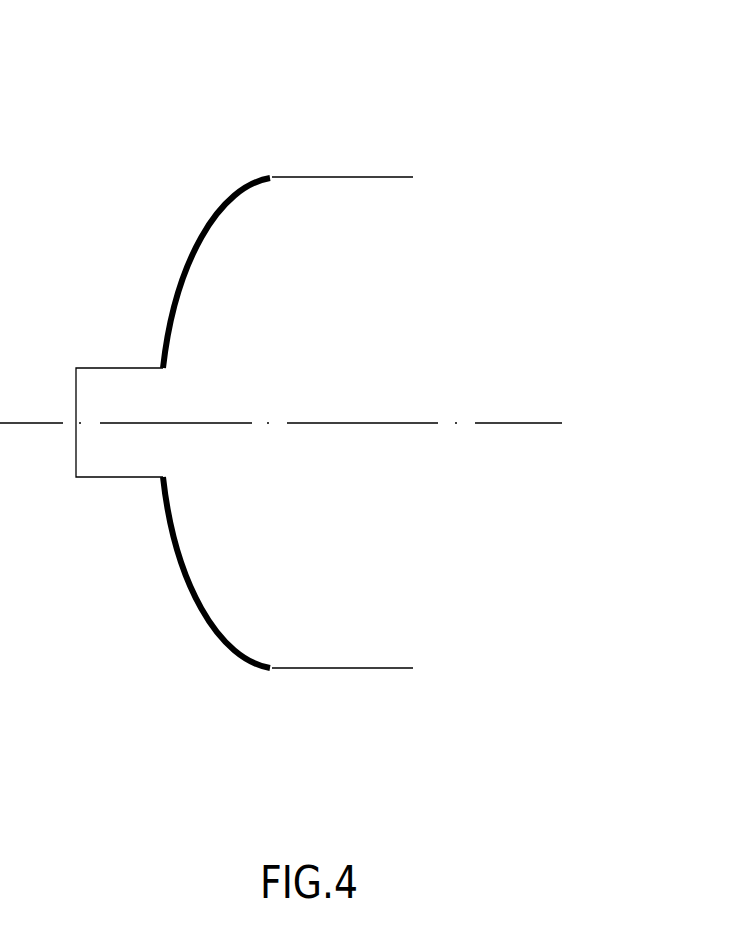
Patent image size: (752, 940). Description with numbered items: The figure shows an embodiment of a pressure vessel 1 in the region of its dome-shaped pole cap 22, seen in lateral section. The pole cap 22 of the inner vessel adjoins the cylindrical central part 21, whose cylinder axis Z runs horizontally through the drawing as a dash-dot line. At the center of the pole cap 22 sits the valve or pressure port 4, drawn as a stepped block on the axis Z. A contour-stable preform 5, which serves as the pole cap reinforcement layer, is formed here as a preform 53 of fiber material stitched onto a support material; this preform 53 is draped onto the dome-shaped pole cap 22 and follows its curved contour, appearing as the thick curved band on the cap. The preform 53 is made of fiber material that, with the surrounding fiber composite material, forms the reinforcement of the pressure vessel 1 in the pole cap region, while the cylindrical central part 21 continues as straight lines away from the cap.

The pressure vessel 1 is at (168, 158).
The valve/pressure port 4 is at (105, 480).
The contour-stable preform 5 is at (246, 343).
The cylindrical central part 21 is at (373, 665).
The dome-shaped pole cap 22 is at (175, 423).
The contour-stable preform from fiber material stitched onto a support material 53 is at (178, 272).
The cylinder axis Z is at (520, 425).